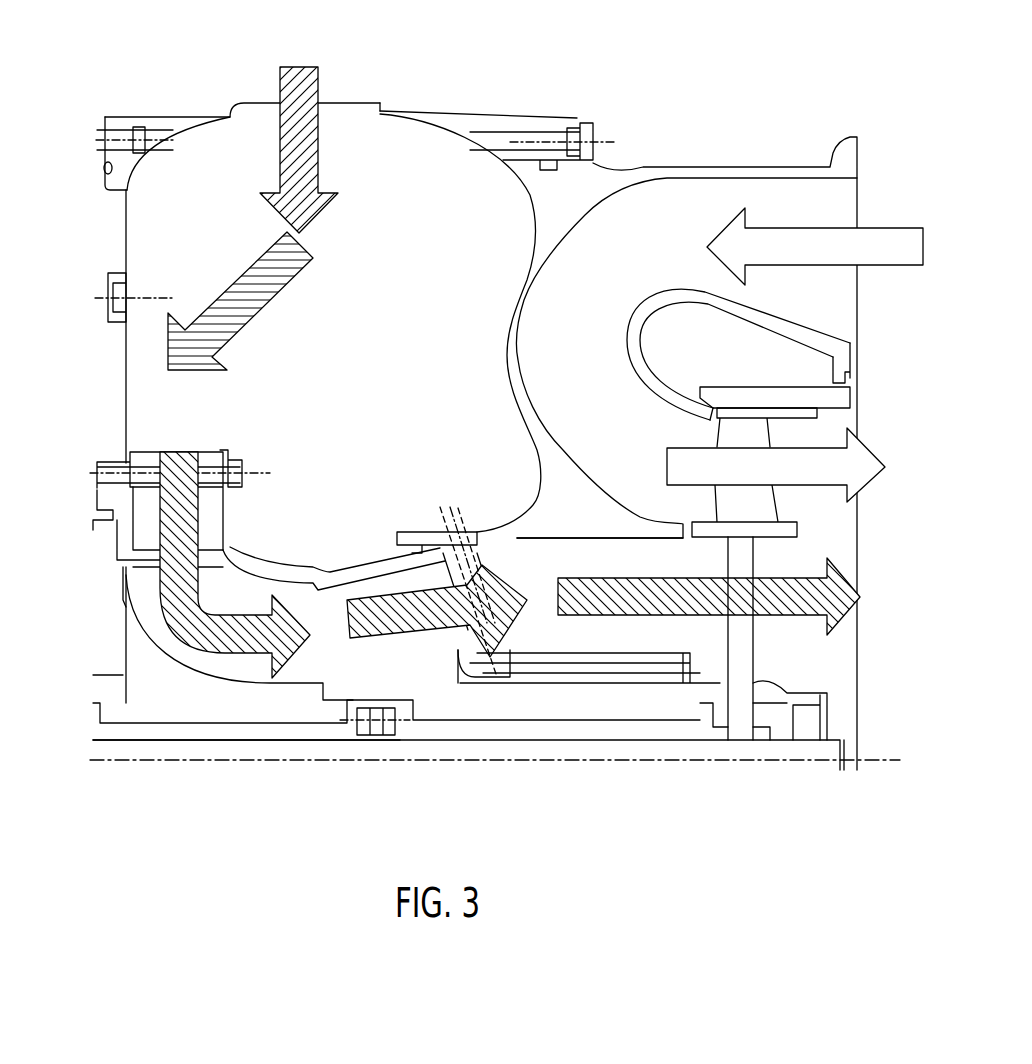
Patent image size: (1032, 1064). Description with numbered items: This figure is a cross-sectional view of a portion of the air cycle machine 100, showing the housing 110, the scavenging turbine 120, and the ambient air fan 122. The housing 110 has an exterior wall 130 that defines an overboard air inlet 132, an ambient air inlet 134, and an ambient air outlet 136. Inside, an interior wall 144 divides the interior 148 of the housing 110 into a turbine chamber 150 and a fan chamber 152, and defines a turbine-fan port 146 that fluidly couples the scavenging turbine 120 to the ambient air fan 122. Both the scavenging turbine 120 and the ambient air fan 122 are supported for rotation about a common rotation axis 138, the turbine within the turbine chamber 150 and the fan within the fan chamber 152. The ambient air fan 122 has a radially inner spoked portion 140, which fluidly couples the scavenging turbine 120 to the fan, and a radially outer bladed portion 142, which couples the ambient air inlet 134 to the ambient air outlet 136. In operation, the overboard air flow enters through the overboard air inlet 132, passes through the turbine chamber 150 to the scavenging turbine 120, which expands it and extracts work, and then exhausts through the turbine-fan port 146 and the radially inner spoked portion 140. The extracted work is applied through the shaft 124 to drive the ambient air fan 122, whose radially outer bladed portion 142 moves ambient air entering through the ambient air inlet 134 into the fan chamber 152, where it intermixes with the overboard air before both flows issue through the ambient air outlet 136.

The air cycle machine 100 is at (151, 824).
The housing 110 is at (466, 86).
The scavenging turbine 120 is at (241, 666).
The ambient air fan 122 is at (796, 659).
The shaft 124 is at (607, 720).
The exterior wall 130 is at (497, 127).
The overboard air inlet 132 is at (352, 110).
The ambient air inlet 134 is at (837, 310).
The ambient air outlet 136 is at (838, 533).
The rotation axis 138 is at (367, 762).
The radially inner spoked portion 140 is at (745, 634).
The radially outer bladed portion 142 is at (753, 433).
The interior wall 144 is at (553, 495).
The turbine-fan port 146 is at (465, 637).
The interior 148 is at (85, 404).
The turbine chamber 150 is at (402, 335).
The fan chamber 152 is at (690, 447).